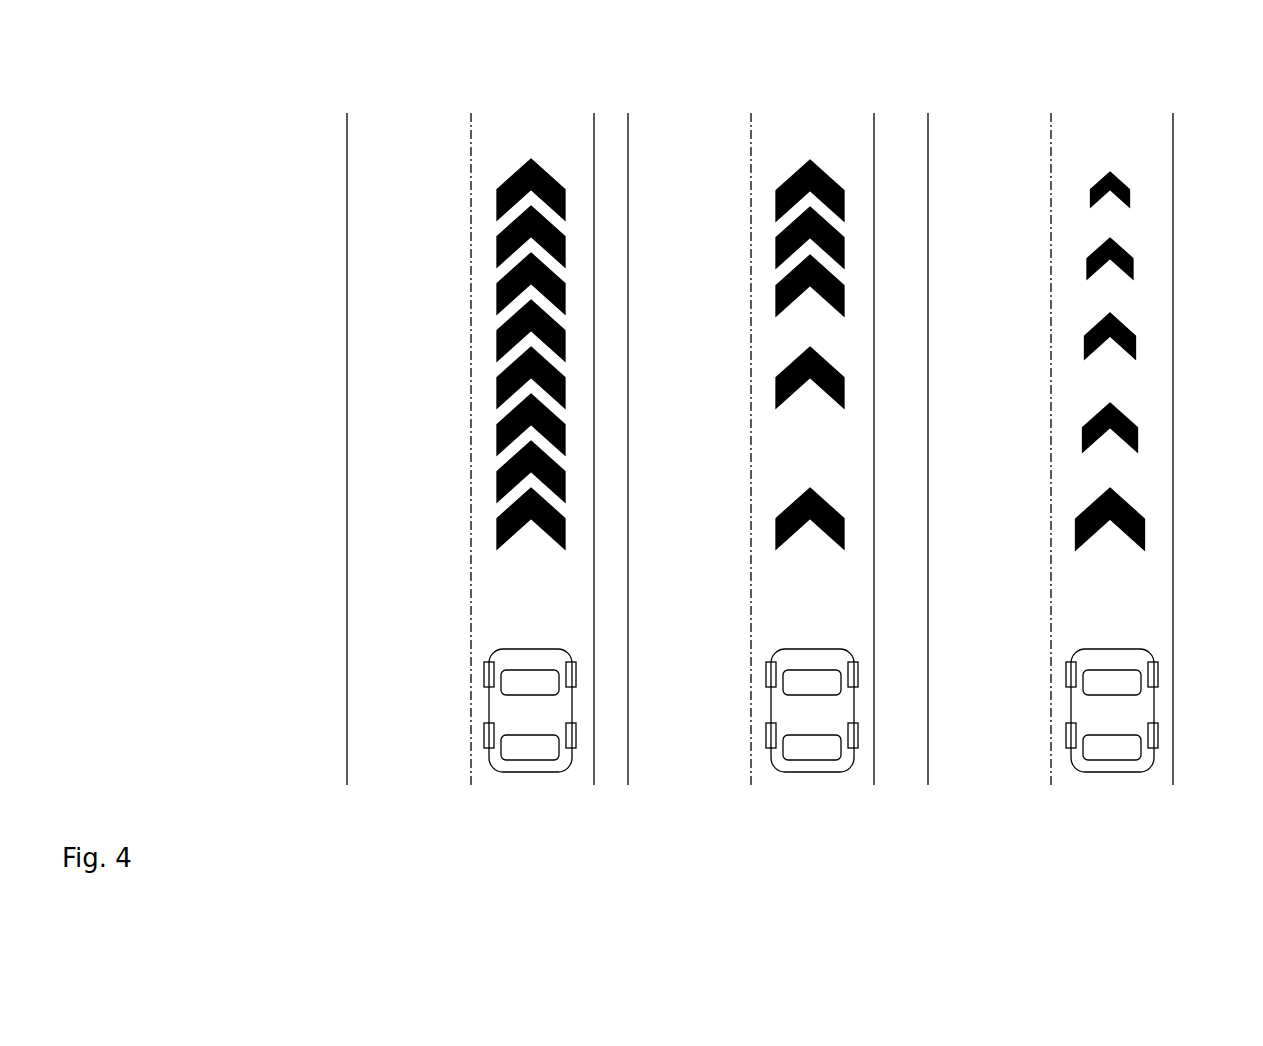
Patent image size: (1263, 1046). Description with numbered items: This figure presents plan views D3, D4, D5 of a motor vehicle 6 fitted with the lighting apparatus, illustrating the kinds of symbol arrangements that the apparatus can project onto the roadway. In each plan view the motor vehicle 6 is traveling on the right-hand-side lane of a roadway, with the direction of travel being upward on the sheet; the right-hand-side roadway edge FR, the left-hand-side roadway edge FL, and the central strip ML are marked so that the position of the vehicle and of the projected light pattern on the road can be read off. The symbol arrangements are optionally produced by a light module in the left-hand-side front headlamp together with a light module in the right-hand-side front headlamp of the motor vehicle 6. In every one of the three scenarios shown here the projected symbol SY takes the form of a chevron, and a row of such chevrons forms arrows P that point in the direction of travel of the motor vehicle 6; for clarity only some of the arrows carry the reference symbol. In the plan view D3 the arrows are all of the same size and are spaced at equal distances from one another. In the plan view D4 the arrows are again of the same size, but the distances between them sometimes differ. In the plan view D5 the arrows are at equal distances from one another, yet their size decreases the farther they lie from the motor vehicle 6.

The plan view D3 is at (498, 117).
The plan view D4 is at (782, 117).
The plan view D5 is at (1072, 117).
The symbol (chevron) SY is at (558, 171).
The arrows P is at (497, 383).
The central strip ML is at (471, 183).
The left-hand-side roadway edge FL is at (347, 673).
The right-hand-side roadway edge FR is at (594, 768).
The motor vehicle 6 is at (532, 772).